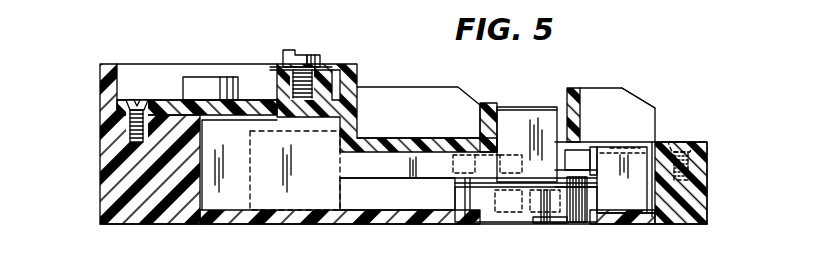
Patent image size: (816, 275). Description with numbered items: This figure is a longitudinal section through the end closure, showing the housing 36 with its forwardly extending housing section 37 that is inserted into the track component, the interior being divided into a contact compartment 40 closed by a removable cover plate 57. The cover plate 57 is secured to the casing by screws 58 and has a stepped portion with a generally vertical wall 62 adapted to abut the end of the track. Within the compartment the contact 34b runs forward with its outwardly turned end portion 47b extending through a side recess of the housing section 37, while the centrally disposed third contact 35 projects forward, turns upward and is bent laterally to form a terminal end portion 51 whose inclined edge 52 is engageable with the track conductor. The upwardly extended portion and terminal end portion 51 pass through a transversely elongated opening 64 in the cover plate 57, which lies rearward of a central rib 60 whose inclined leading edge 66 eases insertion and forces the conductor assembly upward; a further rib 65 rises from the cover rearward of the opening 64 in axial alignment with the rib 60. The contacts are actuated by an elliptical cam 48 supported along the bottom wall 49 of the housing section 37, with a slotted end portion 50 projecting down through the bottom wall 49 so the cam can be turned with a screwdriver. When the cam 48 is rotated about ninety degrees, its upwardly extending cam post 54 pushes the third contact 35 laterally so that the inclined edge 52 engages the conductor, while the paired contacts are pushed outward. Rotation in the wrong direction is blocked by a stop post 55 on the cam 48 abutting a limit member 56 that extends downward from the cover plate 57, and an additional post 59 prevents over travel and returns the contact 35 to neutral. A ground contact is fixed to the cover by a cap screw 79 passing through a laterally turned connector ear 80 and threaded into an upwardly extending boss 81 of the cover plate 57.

The housing 36 is at (100, 160).
The screws 58 is at (136, 99).
The boss 81 is at (268, 82).
The cap screw 79 is at (293, 50).
The connector ear 80 is at (326, 58).
The vertical wall 62 is at (354, 66).
The rib 65 is at (389, 92).
The terminal end portion 51 is at (506, 106).
The inclined edge 52 is at (530, 107).
The opening 64 is at (499, 150).
The post 59 is at (465, 152).
The third contact 35 is at (240, 195).
The cam 48 is at (483, 208).
The end portion 50 is at (538, 224).
The cam post 54 is at (522, 186).
The contact compartment 40 is at (440, 200).
The bottom wall 49 is at (405, 217).
The rib 60 is at (596, 98).
The leading edge 66 is at (642, 95).
The limit member 56 is at (578, 160).
The stop post 55 is at (577, 180).
The end portion 47b is at (622, 148).
The housing section 37 is at (700, 208).
The cover plate 57 is at (708, 152).
The contact 34b is at (625, 207).